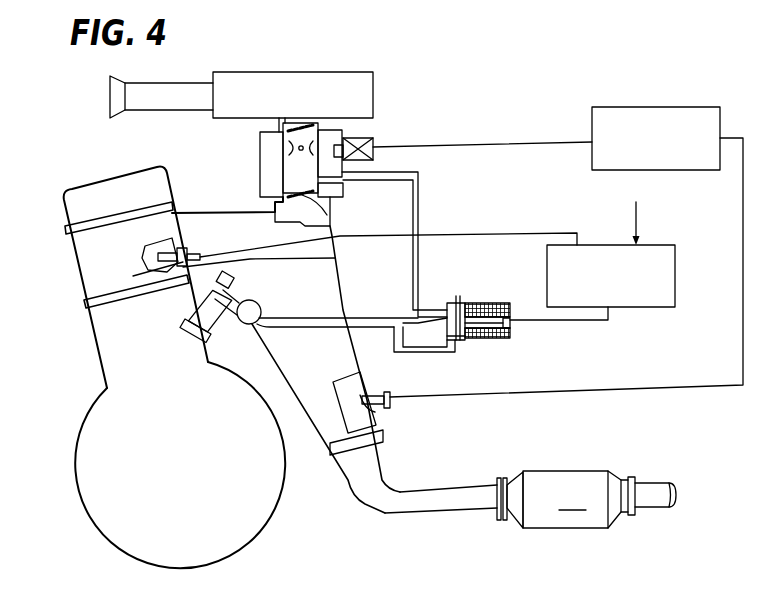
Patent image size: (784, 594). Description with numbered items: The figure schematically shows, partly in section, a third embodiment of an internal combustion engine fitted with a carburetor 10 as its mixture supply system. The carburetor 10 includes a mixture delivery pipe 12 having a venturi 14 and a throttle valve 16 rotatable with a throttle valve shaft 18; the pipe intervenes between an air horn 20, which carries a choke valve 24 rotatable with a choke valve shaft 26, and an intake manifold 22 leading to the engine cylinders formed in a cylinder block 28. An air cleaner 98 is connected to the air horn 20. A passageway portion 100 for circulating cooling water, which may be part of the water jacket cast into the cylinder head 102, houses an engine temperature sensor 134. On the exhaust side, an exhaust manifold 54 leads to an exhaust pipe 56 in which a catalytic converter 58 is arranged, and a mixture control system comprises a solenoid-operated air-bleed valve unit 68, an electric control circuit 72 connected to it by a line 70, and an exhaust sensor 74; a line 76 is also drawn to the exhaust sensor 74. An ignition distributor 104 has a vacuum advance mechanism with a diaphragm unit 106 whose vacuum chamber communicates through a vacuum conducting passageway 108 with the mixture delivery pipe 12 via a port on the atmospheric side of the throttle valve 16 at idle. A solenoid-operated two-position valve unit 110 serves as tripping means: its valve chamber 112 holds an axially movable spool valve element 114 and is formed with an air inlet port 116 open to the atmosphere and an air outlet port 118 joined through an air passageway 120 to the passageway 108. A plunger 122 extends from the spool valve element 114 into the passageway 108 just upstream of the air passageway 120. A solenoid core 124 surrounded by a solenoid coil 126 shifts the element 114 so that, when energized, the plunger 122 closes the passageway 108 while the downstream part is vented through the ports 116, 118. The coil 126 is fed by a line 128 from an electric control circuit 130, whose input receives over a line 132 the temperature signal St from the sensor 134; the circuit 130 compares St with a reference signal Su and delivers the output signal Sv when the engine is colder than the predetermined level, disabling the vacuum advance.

The air cleaner 98 is at (318, 72).
The carburetor 10 is at (258, 142).
The mixture delivery pipe 12 is at (283, 183).
The venturi 14 is at (287, 150).
The throttle valve 16 is at (330, 205).
The throttle valve shaft 18 is at (326, 209).
The air horn 20 is at (282, 120).
The intake manifold 22 is at (218, 210).
The choke valve 24 is at (290, 127).
The choke valve shaft 26 is at (304, 124).
The cylinder block 28 is at (101, 363).
The exhaust manifold 54 is at (300, 377).
The exhaust pipe 56 is at (447, 508).
The catalytic converter 58 is at (586, 499).
The valve unit 68 is at (374, 132).
The line 70 is at (488, 145).
The electric control circuit 72 is at (636, 107).
The exhaust sensor 74 is at (377, 413).
The sensor signal line 76 is at (670, 390).
The passageway portion 100 is at (163, 248).
The cylinder head 102 is at (83, 281).
The ignition distributor 104 is at (198, 312).
The diaphragm unit 106 is at (257, 324).
The vacuum conducting passageway 108 is at (383, 308).
The solenoid-operated two-position valve unit 110 is at (521, 335).
The valve chamber 112 is at (453, 333).
The spool valve element 114 is at (450, 306).
The air inlet port 116 is at (461, 299).
The air outlet port 118 is at (463, 338).
The air passageway 120 is at (427, 352).
The plunger 122 is at (430, 316).
The solenoid core 124 is at (500, 338).
The solenoid coil 126 is at (487, 302).
The line 128 is at (606, 318).
The electric control circuit 130 is at (675, 292).
The line 132 is at (527, 228).
The engine temperature sensor 134 is at (145, 250).
The electric signal St is at (463, 219).
The output signal Sv is at (529, 308).
The reference signal Su is at (652, 223).